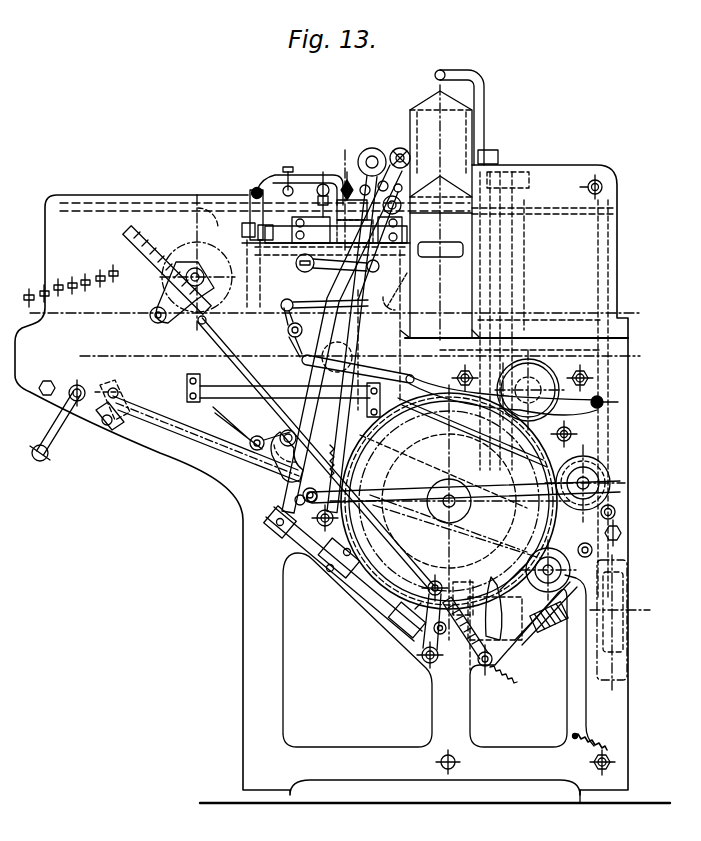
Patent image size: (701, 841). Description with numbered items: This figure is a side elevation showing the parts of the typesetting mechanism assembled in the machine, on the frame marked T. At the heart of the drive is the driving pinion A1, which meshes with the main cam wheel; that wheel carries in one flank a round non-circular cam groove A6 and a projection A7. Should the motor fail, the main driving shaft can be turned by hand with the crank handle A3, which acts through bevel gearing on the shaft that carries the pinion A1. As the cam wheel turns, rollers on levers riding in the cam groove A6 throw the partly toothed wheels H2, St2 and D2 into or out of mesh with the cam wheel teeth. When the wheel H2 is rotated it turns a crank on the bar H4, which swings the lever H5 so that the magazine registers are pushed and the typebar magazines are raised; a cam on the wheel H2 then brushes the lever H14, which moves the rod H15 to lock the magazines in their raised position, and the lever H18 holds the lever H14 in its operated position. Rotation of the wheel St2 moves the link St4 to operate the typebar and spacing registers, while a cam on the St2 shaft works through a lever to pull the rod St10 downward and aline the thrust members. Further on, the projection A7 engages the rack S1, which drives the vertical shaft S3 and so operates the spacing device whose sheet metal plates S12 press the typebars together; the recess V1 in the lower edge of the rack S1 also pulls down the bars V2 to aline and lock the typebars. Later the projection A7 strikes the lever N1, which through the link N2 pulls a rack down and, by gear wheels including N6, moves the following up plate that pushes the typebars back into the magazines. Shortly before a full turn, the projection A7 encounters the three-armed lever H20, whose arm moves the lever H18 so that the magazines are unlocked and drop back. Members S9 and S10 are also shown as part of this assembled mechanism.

The machine frame T is at (342, 484).
The gear wheel N6 is at (193, 227).
The vertical shaft S3 is at (250, 278).
The lever H5 is at (353, 229).
The rod H15 is at (496, 266).
The rod St10 is at (512, 298).
The link N2 is at (407, 537).
The rack S1 is at (342, 339).
The recess V1 is at (370, 343).
The bar V2 is at (347, 341).
The link St4 is at (472, 416).
The toothed wheel St2 is at (514, 390).
The lever H14 is at (603, 444).
The bar H4 is at (446, 492).
The toothed wheel H2 is at (612, 497).
The driving pinion A1 is at (579, 548).
The projection A7 is at (527, 560).
The lever H18 is at (601, 516).
The slide rail S10 is at (301, 530).
The sheet metal plate S12 is at (406, 626).
The cam groove A6 is at (389, 540).
The slide S9 is at (255, 443).
The crank handle A3 is at (55, 436).
The toothed wheel D2 is at (280, 477).
The lever N1 is at (437, 650).
The three-armed lever H20 is at (496, 658).